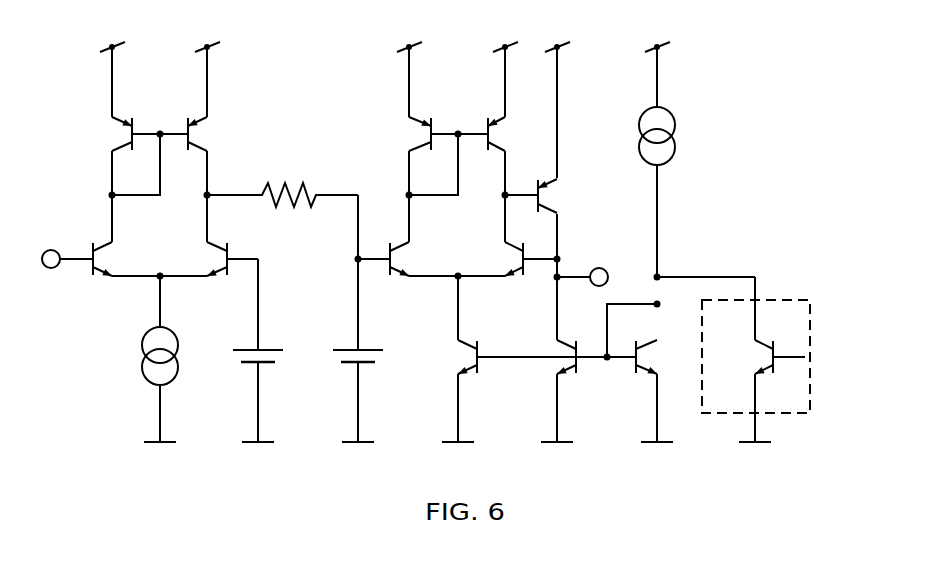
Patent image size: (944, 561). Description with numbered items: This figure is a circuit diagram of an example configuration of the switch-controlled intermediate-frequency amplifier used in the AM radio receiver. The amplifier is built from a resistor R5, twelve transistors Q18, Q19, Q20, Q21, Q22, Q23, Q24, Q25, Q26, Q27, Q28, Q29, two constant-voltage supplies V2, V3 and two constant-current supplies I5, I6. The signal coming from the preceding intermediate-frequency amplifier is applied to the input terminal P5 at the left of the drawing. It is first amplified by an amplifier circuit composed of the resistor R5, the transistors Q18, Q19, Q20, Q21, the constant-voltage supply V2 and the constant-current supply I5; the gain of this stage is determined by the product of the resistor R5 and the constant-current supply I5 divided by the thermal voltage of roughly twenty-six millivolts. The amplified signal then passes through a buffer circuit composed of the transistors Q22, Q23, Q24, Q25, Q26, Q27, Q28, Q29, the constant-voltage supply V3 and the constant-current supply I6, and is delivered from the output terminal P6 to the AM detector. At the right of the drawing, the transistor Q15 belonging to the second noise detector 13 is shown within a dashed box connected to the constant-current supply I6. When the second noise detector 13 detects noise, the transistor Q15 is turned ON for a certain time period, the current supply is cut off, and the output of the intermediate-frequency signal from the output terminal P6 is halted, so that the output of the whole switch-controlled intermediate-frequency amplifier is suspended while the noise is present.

The transistor Q18 is at (109, 134).
The transistor Q19 is at (126, 260).
The transistor Q20 is at (213, 134).
The transistor Q21 is at (193, 260).
The transistor Q22 is at (407, 134).
The transistor Q23 is at (424, 260).
The transistor Q24 is at (511, 134).
The transistor Q25 is at (490, 260).
The transistor Q26 is at (451, 391).
The transistor Q27 is at (562, 196).
The transistor Q28 is at (546, 385).
The transistor Q29 is at (663, 391).
The transistor of the second noise detector Q15 is at (762, 359).
The second noise detector 13 is at (798, 304).
The constant-current supply I5 is at (170, 359).
The constant-current supply I6 is at (669, 161).
The constant-voltage supply V2 is at (263, 310).
The constant-voltage supply V3 is at (363, 339).
The resistor R5 is at (282, 211).
The input terminal P5 is at (50, 268).
The output terminal P6 is at (608, 277).